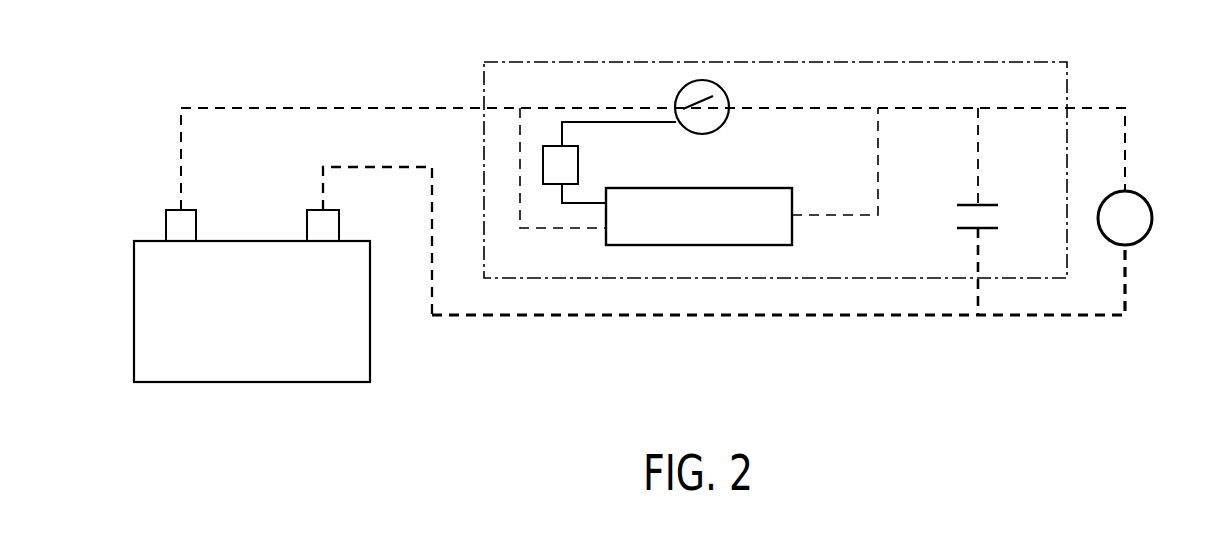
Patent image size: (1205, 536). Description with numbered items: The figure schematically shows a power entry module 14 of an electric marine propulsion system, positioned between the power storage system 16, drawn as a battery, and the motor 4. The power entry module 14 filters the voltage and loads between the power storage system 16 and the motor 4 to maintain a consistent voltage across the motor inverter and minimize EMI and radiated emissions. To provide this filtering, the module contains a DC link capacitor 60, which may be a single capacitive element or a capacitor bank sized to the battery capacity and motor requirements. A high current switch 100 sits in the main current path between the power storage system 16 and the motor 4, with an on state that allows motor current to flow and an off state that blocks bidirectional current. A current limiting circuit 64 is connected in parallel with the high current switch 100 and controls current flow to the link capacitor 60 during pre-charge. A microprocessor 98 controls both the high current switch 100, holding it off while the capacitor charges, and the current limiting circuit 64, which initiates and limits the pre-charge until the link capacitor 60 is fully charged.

The motor 4 is at (1142, 193).
The power entry module 14 is at (874, 58).
The power storage system 16 is at (371, 311).
The DC link capacitor 60 is at (980, 207).
The current limiting circuit 64 is at (792, 203).
The microprocessor 98 is at (578, 166).
The high current switch 100 is at (720, 85).